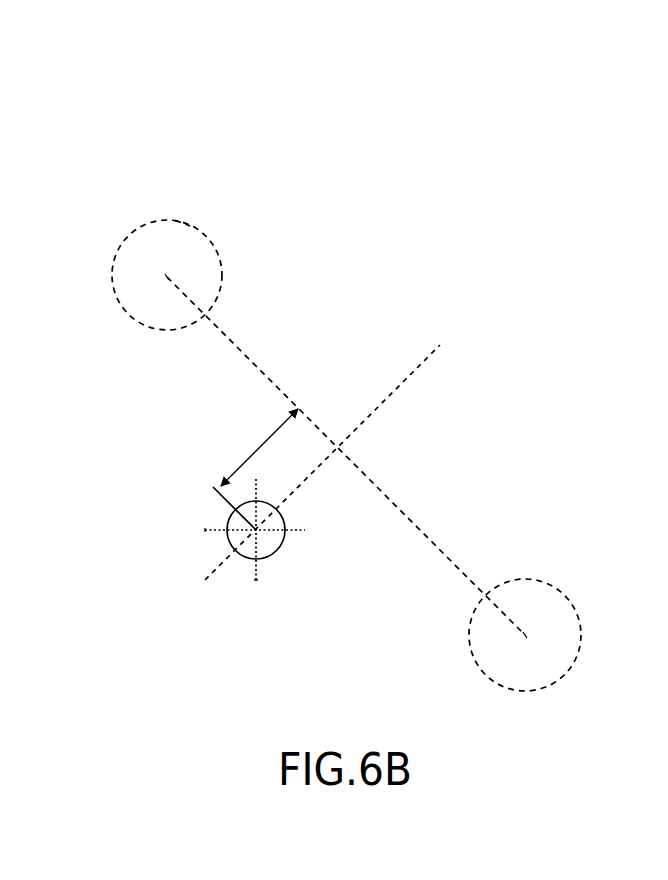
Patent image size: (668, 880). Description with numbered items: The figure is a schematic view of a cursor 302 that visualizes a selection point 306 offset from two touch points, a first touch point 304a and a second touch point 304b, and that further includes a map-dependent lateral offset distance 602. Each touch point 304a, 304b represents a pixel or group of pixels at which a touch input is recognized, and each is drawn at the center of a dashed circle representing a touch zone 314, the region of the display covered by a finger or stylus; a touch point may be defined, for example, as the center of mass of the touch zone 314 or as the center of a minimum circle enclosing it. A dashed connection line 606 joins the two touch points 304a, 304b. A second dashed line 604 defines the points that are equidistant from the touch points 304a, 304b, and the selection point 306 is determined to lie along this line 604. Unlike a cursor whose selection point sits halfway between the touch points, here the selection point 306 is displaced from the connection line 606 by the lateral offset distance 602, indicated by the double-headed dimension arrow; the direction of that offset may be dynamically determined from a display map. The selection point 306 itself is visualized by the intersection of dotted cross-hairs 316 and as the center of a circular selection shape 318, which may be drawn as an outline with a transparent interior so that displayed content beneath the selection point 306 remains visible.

The cursor 302 is at (102, 180).
The first touch point 304a is at (526, 633).
The second touch point 304b is at (167, 276).
The selection point 306 is at (271, 550).
The touch zone 314 is at (180, 221).
The cross-hairs 316 is at (255, 577).
The selection shape 318 is at (284, 519).
The lateral offset distance 602 is at (255, 469).
The line 604 is at (418, 368).
The connection line 606 is at (250, 360).